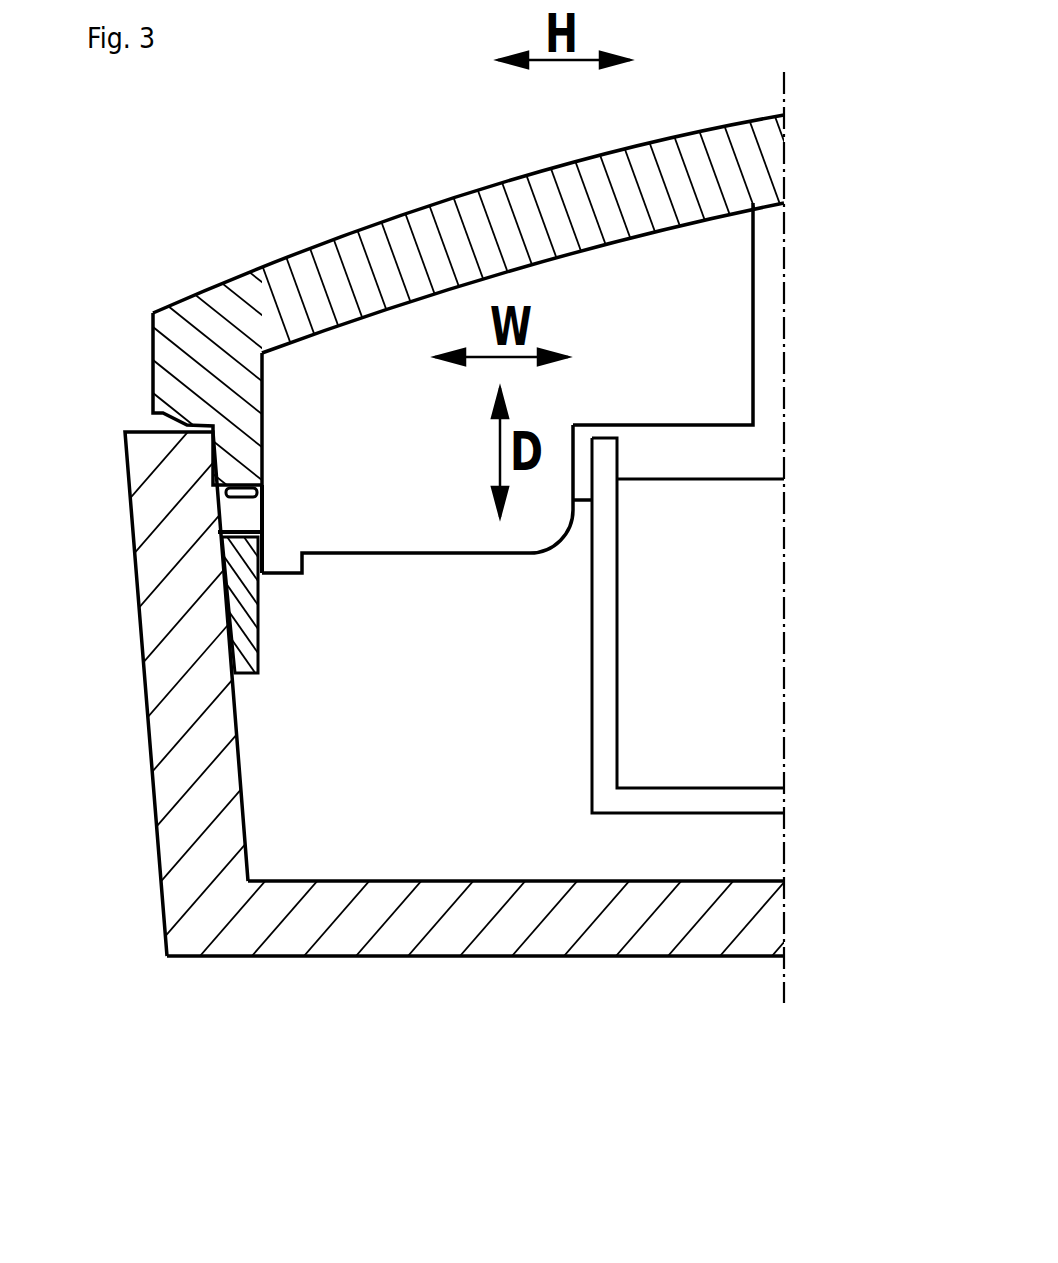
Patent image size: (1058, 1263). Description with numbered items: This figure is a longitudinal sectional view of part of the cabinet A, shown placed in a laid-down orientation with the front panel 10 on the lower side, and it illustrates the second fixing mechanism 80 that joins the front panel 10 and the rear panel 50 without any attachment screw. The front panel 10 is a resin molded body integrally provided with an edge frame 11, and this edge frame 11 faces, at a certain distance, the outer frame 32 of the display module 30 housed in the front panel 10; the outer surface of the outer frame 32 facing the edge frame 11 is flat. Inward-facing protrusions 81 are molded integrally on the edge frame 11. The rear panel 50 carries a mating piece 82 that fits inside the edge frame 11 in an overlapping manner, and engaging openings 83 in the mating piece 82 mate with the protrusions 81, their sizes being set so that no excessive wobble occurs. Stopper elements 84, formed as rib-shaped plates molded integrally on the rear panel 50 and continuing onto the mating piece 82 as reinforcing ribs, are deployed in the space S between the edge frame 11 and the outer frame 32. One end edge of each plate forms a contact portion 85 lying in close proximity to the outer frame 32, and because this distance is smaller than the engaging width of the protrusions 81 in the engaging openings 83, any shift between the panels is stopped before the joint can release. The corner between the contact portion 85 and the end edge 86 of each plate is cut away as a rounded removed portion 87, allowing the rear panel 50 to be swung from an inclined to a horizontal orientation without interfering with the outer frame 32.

The front panel 10 is at (493, 957).
The edge frame 11 is at (147, 715).
The display module 30 is at (695, 625).
The outer frame 32 is at (590, 750).
The rear panel 50 is at (405, 207).
The second fixing mechanism 80 is at (464, 637).
The protrusions 81 is at (250, 508).
The mating piece 82 is at (262, 627).
The engaging openings 83 is at (257, 495).
The stopper elements 84 is at (430, 533).
The contact portion 85 is at (593, 500).
The end edge 86 is at (470, 557).
The removed portion 87 is at (563, 543).
The cabinet A is at (130, 240).
The space S is at (446, 745).